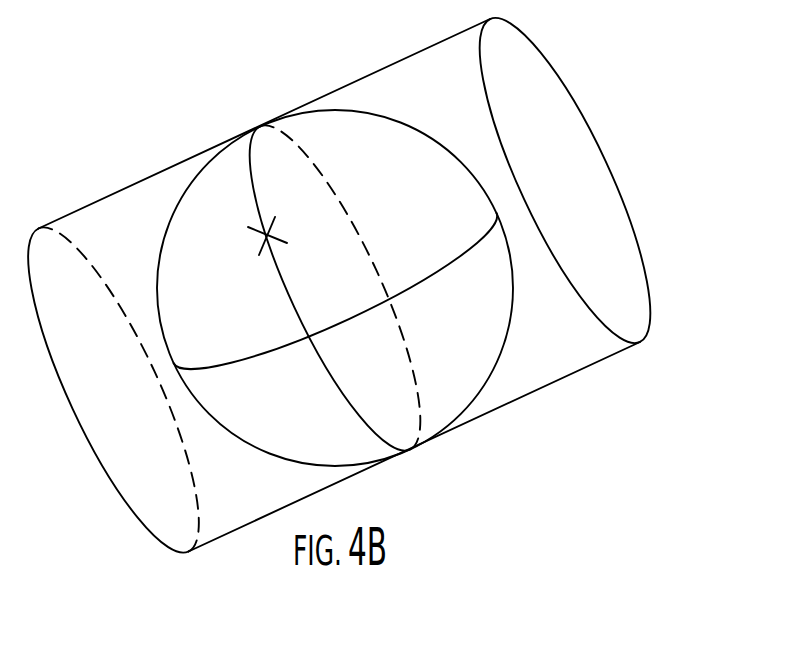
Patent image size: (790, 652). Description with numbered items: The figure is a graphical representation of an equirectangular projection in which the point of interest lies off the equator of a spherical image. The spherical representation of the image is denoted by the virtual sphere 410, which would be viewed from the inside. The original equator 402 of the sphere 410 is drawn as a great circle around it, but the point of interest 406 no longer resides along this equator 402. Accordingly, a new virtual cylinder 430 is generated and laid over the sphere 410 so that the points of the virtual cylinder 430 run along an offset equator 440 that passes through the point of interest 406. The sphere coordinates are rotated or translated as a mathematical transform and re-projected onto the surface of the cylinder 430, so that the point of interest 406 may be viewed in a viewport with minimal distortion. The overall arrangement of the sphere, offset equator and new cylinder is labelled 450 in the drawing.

The equator 402 is at (410, 288).
The point of interest 406 is at (265, 233).
The virtual sphere 410 is at (353, 110).
The new virtual cylinder 430 is at (570, 375).
The offset equator 440 is at (250, 173).
The spherical joint assembly 450 is at (641, 109).